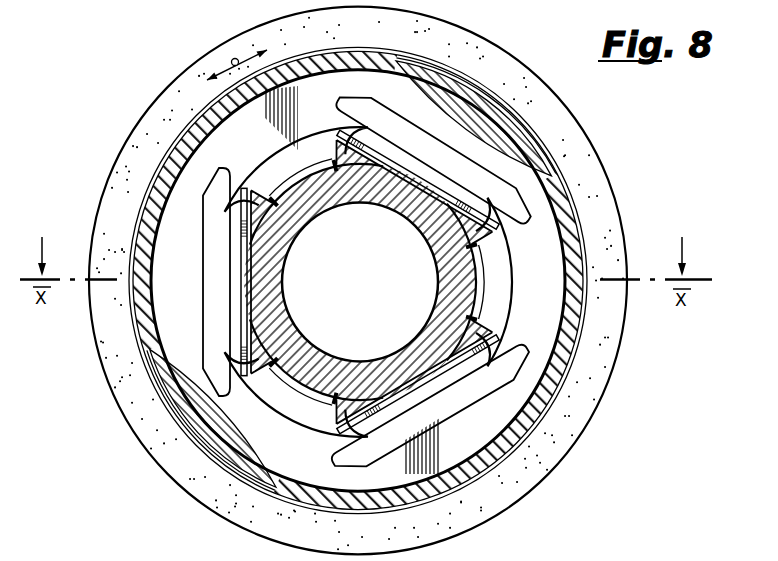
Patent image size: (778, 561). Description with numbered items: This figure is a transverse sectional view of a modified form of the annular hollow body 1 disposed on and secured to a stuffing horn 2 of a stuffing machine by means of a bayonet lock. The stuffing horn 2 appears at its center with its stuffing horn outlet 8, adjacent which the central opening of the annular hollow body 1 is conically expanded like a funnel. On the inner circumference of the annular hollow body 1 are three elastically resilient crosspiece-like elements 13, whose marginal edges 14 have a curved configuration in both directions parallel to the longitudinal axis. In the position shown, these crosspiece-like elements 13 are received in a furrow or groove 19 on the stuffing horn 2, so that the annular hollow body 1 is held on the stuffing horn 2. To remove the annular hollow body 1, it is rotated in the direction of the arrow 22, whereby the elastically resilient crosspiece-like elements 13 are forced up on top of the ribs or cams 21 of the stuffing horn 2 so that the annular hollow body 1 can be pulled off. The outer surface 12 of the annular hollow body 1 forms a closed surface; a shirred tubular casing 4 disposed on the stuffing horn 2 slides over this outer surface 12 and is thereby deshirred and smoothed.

The annular hollow body 1 is at (578, 212).
The stuffing horn 2 is at (443, 270).
The shirred tubular casing 4 is at (533, 490).
The stuffing horn outlet 8 is at (366, 268).
The outer surface 12 is at (553, 168).
The crosspiece-like elements 13 is at (226, 322).
The marginal edges 14 is at (241, 252).
The furrow or groove 19 is at (270, 205).
The ribs or cams 21 is at (305, 180).
The arrow 22 is at (243, 88).